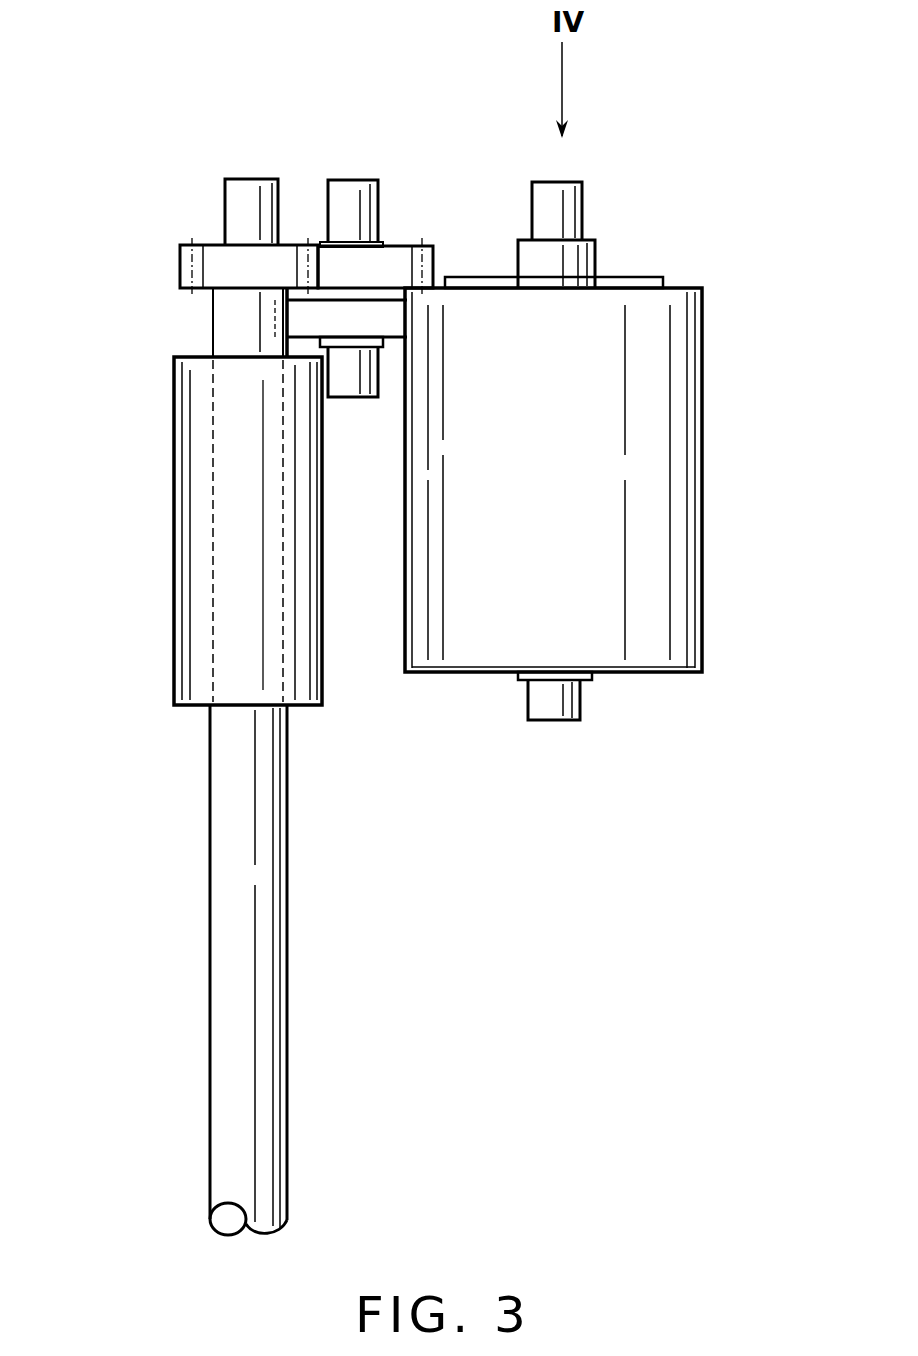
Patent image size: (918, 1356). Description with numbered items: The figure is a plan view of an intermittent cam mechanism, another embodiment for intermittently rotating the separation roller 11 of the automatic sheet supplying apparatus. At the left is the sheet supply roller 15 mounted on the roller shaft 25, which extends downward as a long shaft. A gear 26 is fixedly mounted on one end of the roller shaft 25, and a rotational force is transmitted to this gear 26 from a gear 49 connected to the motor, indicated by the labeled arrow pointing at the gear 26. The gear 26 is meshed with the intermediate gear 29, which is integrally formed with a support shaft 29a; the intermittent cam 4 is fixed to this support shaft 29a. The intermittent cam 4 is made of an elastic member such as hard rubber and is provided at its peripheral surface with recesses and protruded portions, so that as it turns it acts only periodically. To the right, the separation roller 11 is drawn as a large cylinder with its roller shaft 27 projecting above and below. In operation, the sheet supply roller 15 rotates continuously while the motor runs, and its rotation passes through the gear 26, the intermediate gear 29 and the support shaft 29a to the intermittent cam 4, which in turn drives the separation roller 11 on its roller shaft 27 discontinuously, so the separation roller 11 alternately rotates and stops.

The intermittent cam 4 is at (347, 318).
The separation roller 11 is at (685, 457).
The sheet supply roller 15 is at (190, 518).
The roller shaft 25 is at (230, 873).
The gear 26 is at (180, 265).
The roller shaft 27 is at (563, 700).
The intermediate gear 29 is at (392, 263).
The support shaft 29a is at (358, 195).
The gear 49 is at (143, 145).